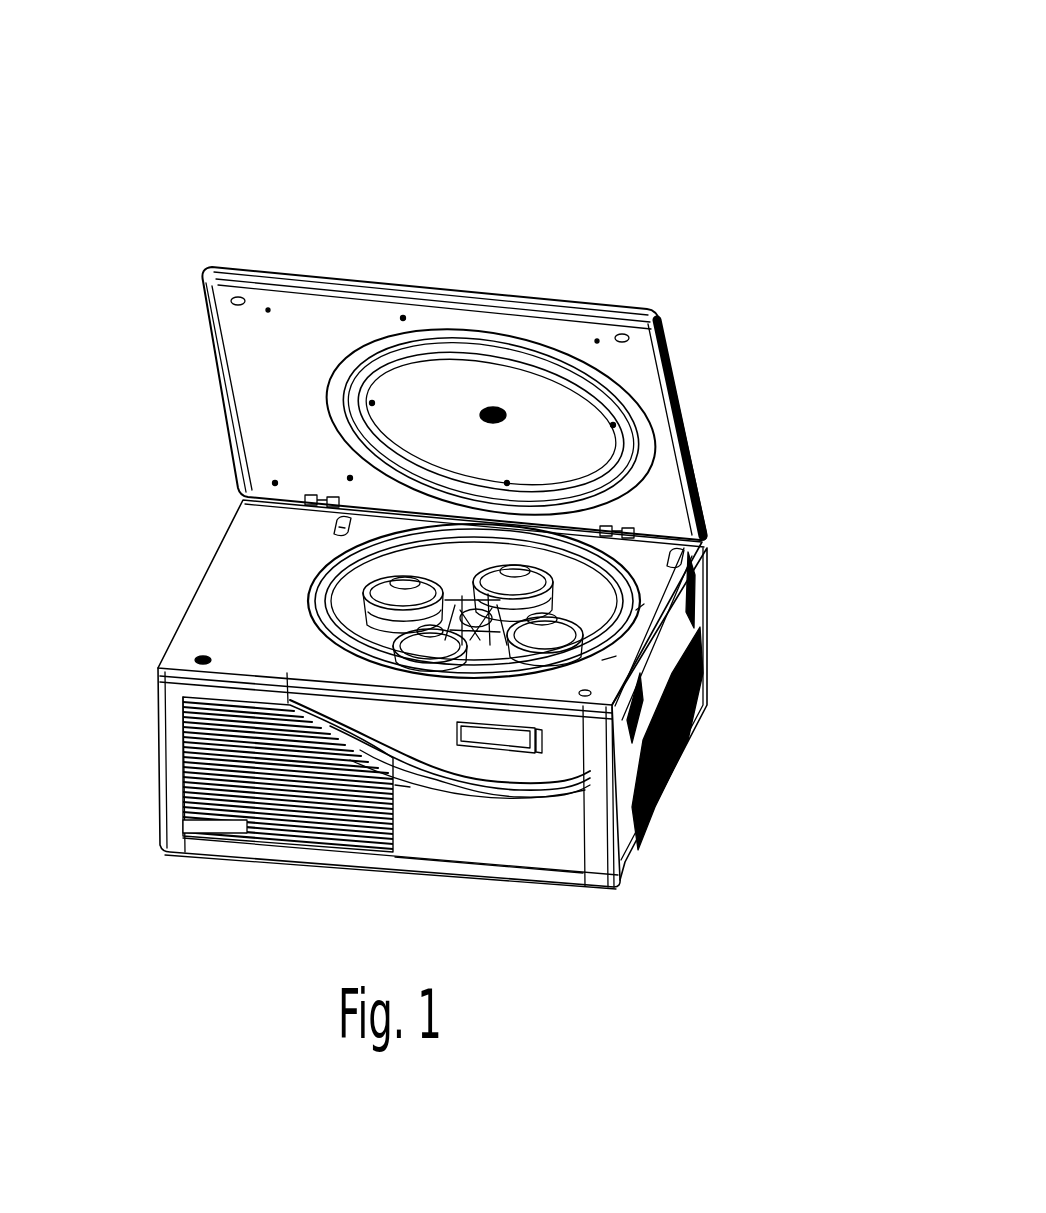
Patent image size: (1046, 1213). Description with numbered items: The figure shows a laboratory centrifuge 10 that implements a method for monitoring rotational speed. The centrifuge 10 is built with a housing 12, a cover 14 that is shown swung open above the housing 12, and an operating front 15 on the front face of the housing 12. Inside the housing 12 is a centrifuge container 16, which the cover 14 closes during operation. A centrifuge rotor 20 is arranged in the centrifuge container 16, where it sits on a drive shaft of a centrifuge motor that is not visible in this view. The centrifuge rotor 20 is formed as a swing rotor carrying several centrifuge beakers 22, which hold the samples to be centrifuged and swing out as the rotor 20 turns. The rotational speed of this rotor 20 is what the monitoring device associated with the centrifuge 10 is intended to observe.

The laboratory centrifuge 10 is at (626, 170).
The housing 12 is at (207, 626).
The cover 14 is at (293, 337).
The operating front 15 is at (527, 828).
The centrifuge container 16 is at (610, 612).
The centrifuge rotor 20 is at (583, 591).
The centrifuge beakers 22 is at (615, 645).